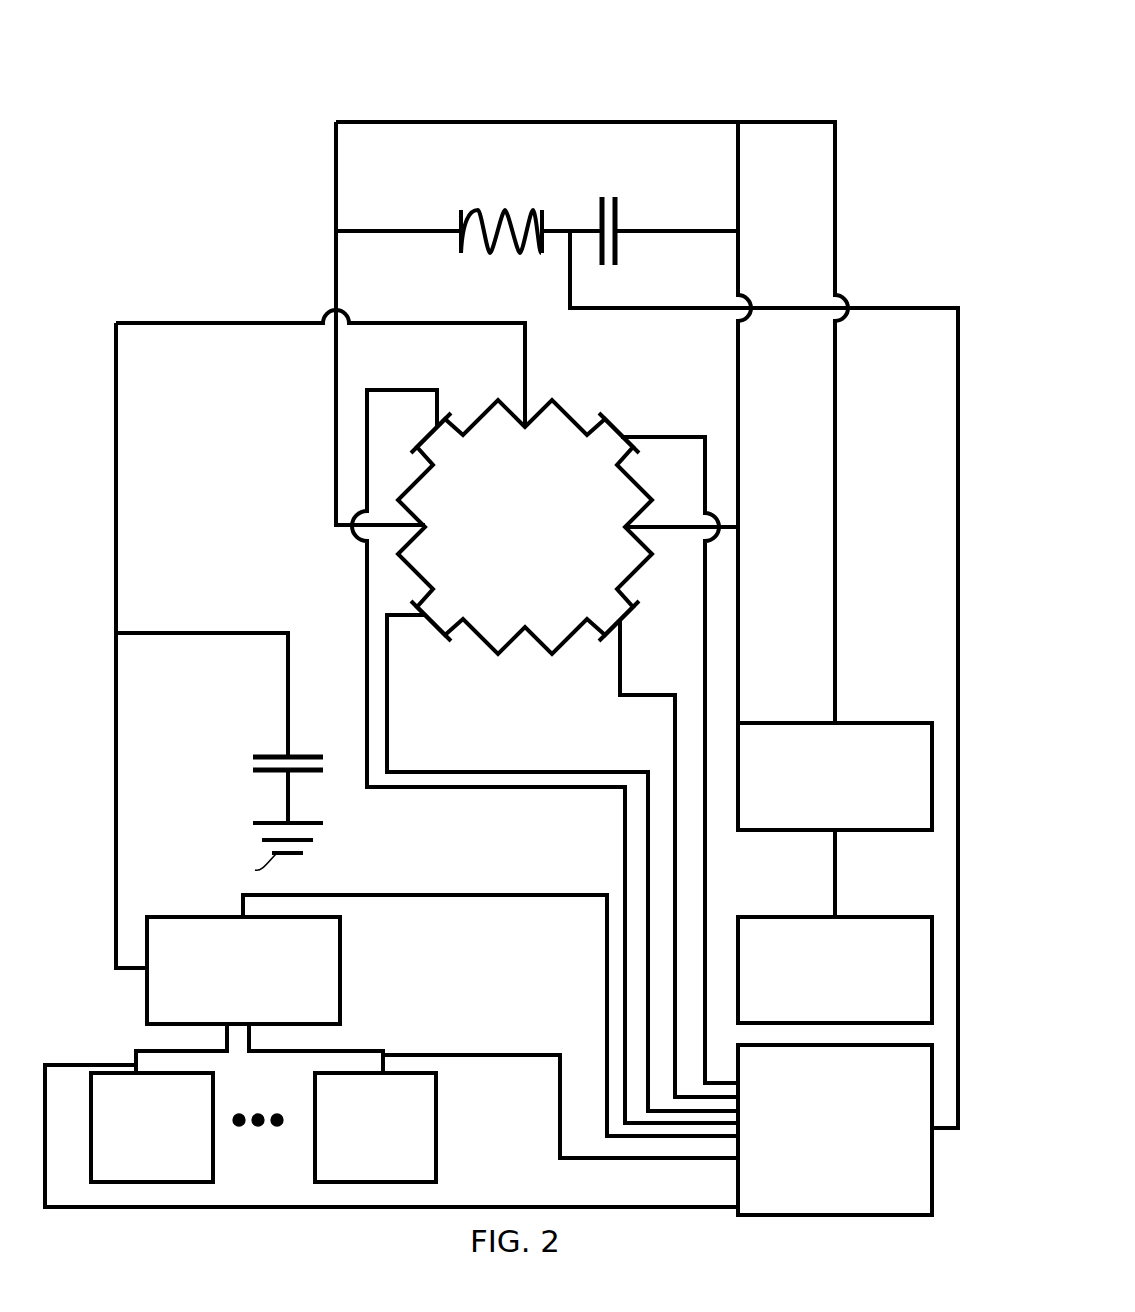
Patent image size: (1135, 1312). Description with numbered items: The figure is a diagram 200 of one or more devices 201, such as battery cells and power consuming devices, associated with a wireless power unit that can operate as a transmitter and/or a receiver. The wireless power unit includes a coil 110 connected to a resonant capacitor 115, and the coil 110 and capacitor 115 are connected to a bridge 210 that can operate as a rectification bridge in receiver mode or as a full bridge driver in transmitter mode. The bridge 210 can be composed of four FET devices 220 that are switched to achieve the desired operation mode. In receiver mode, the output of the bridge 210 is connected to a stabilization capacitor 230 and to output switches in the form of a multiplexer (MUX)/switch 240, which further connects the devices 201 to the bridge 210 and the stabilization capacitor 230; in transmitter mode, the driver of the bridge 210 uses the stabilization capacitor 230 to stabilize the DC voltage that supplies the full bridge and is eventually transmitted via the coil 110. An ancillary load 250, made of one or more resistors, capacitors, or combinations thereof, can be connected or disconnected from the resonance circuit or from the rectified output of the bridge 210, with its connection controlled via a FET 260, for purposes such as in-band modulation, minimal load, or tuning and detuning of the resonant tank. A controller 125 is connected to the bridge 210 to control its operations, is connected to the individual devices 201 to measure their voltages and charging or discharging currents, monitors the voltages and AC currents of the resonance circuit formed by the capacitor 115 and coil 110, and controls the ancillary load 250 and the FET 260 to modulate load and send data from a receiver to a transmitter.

The diagram 200 is at (810, 71).
The coil 110 is at (460, 218).
The resonant capacitor 115 is at (601, 204).
The bridge 210 is at (498, 525).
The FET devices 220 is at (462, 409).
The stabilization capacitor 230 is at (270, 757).
The multiplexer (MUX)/switch 240 is at (262, 997).
The devices 201 is at (394, 1153).
The FET 260 is at (877, 790).
The ancillary load 250 is at (887, 998).
The controller 125 is at (817, 1157).